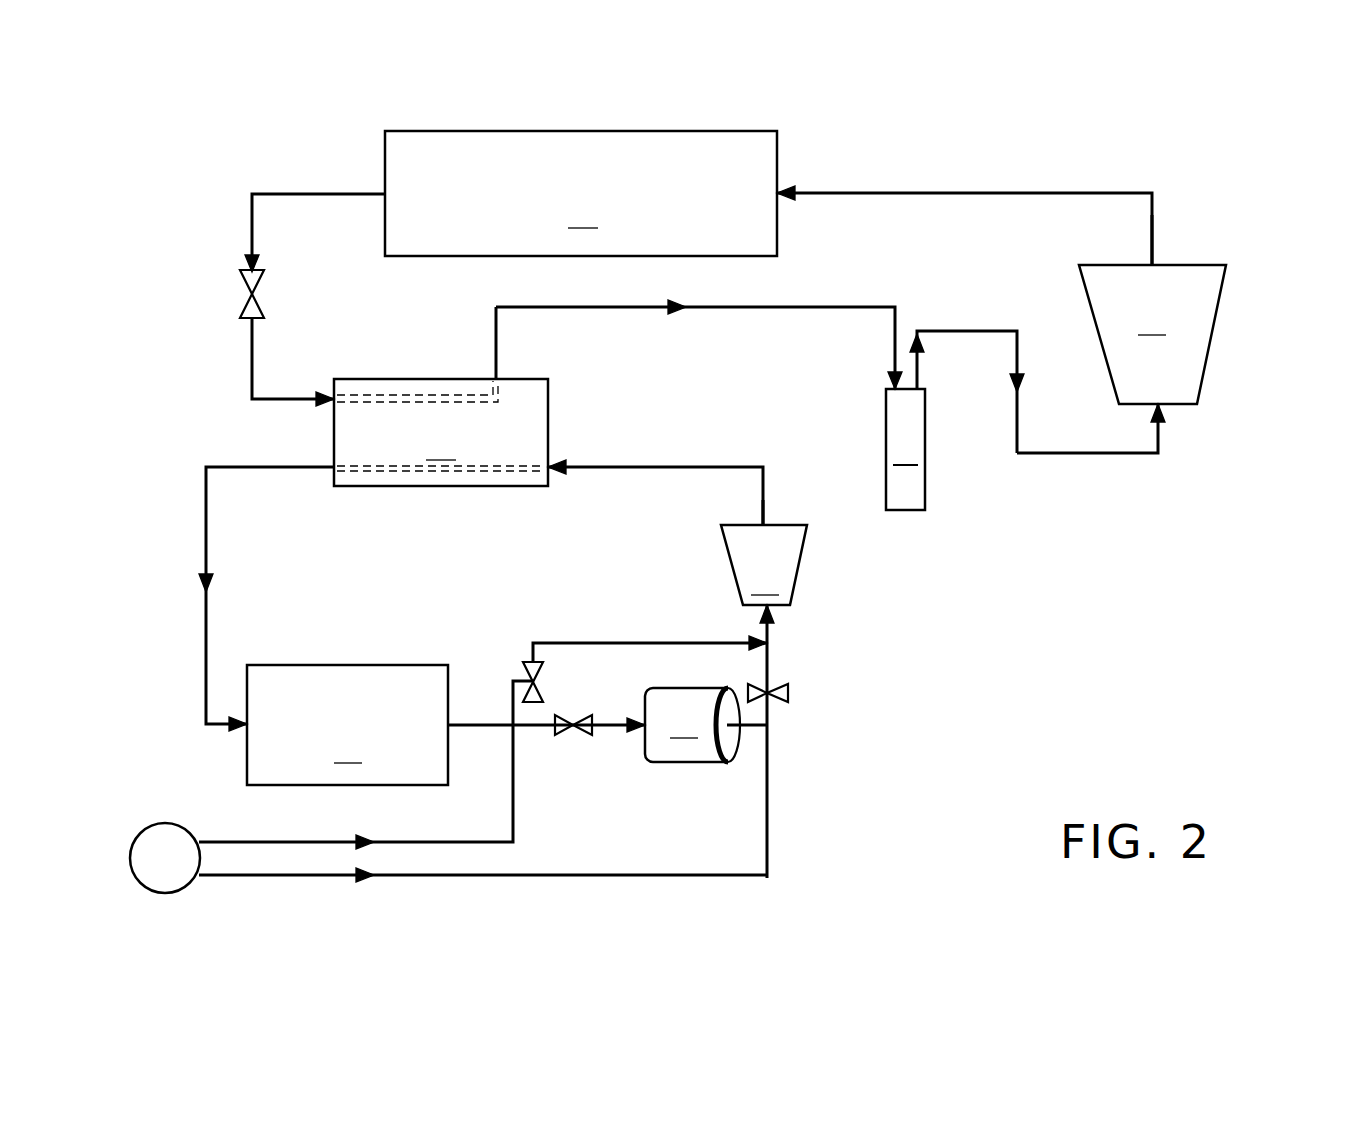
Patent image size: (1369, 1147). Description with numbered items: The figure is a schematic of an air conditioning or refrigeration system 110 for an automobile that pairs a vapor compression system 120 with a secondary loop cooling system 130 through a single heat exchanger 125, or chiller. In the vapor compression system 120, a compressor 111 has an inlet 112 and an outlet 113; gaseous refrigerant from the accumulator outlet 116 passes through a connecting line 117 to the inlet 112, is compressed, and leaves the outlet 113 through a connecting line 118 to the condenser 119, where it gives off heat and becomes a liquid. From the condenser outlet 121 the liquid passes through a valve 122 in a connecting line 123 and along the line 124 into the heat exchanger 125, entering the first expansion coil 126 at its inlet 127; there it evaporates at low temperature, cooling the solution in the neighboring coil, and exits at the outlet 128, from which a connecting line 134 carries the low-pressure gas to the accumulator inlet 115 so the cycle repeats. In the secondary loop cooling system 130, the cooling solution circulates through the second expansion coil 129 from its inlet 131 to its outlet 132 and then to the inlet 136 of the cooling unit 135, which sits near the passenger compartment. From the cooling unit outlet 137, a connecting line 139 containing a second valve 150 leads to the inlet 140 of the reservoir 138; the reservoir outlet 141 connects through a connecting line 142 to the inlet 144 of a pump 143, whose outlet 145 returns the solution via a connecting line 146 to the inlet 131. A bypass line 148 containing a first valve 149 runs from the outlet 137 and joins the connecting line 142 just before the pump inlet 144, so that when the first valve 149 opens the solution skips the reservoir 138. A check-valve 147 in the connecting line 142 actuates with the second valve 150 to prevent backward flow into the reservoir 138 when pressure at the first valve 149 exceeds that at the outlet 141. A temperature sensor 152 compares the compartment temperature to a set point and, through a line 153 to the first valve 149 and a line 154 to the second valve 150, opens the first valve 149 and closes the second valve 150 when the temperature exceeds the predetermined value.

The air conditioning or refrigeration system 110 is at (976, 645).
The compressor 111 is at (1152, 334).
The compressor inlet 112 is at (1163, 410).
The compressor outlet 113 is at (1153, 262).
The accumulator inlet 115 is at (885, 389).
The accumulator outlet 116 is at (918, 386).
The connecting line 117 is at (1066, 453).
The connecting line 118 is at (1003, 194).
The condenser 119 is at (581, 193).
The vapor compression system 120 is at (1236, 213).
The condenser outlet 121 is at (782, 196).
The valve 122 is at (385, 196).
The connecting line 123 is at (262, 288).
The expansion valve outlet line 124 is at (251, 370).
The heat exchanger 125 is at (441, 432).
The first expansion coil 126 is at (411, 395).
The first expansion coil inlet 127 is at (333, 401).
The first expansion coil outlet 128 is at (497, 379).
The second expansion coil 129 is at (380, 478).
The secondary loop cooling system 130 is at (164, 565).
The second expansion coil inlet 131 is at (553, 470).
The second expansion coil outlet 132 is at (333, 470).
The connecting line 134 is at (692, 307).
The cooling unit 135 is at (205, 617).
The cooling unit inlet 136 is at (246, 735).
The cooling unit outlet 137 is at (452, 728).
The reservoir 138 is at (692, 712).
The connecting line 139 is at (500, 715).
The reservoir inlet 140 is at (640, 745).
The reservoir outlet 141 is at (728, 728).
The connecting line 142 is at (771, 660).
The pump 143 is at (764, 565).
The pump inlet 144 is at (772, 606).
The pump outlet 145 is at (762, 520).
The connecting line 146 is at (727, 466).
The check-valve 147 is at (789, 694).
The bypass line 148 is at (610, 641).
The first valve 149 is at (526, 664).
The second valve 150 is at (583, 736).
The temperature sensor 152 is at (165, 823).
The line 153 is at (468, 842).
The line 154 is at (468, 876).